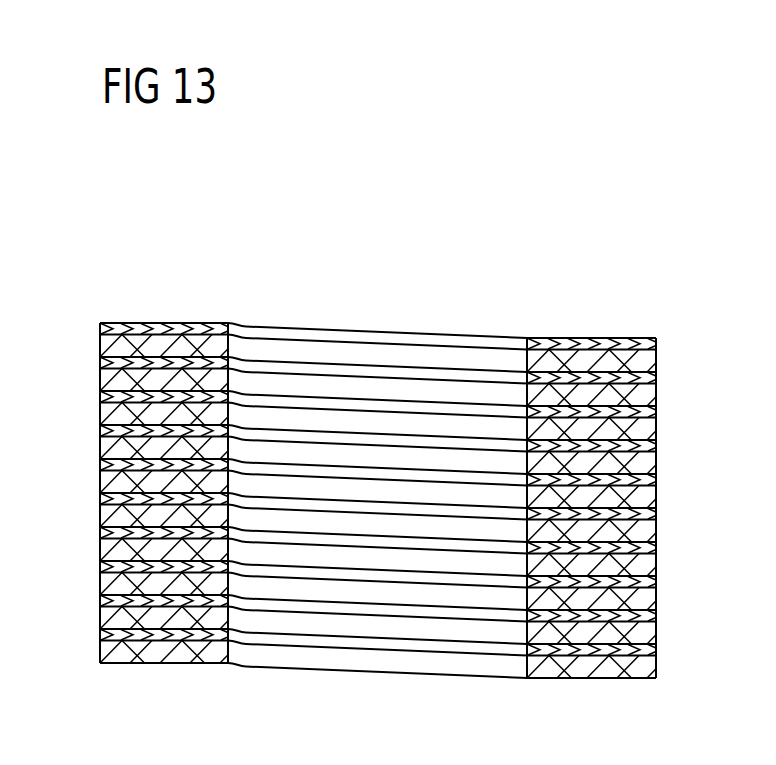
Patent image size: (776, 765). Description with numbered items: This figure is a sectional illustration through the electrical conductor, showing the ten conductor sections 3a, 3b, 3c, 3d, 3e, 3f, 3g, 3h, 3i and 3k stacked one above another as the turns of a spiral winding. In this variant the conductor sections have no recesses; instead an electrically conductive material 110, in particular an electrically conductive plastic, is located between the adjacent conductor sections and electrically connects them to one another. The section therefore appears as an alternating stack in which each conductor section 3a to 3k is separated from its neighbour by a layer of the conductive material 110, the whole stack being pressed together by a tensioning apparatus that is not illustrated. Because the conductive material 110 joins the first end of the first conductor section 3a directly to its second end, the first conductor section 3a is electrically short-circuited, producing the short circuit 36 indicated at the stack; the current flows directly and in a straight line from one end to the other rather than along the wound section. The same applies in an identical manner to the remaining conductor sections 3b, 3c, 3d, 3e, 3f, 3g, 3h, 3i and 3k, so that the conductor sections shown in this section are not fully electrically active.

The electrically conductive material 110 is at (174, 359).
The short circuit 36 is at (666, 379).
The first conductor section 3a is at (656, 362).
The conductor section 3b is at (656, 391).
The conductor section 3c is at (656, 425).
The conductor section 3d is at (656, 459).
The conductor section 3e is at (656, 493).
The conductor section 3f is at (656, 527).
The conductor section 3g is at (656, 561).
The conductor section 3h is at (656, 595).
The conductor section 3i is at (656, 629).
The conductor section 3k is at (656, 663).